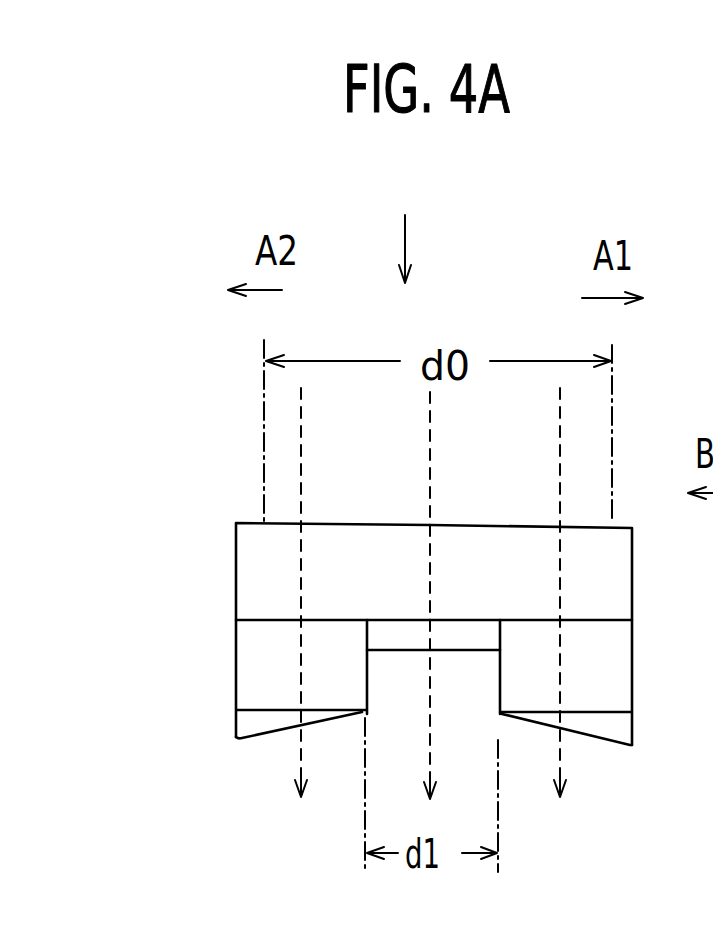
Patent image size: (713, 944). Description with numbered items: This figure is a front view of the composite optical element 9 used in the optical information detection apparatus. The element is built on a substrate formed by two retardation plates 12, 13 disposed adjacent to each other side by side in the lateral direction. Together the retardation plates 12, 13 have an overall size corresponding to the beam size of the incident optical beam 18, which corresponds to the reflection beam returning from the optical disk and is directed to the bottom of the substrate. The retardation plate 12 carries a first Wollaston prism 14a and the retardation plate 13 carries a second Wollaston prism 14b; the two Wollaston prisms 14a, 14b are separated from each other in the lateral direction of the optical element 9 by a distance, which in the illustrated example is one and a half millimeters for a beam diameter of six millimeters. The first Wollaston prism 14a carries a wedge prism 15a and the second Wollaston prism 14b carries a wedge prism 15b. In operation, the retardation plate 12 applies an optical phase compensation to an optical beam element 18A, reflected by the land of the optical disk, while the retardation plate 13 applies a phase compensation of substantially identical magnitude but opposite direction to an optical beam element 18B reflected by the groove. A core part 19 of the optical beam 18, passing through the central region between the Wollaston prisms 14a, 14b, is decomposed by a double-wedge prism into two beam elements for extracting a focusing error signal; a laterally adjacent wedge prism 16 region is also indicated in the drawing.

The composite optical element 9 is at (180, 163).
The retardation plate 12 is at (236, 568).
The retardation plate 13 is at (613, 572).
The first Wollaston prism 14a is at (236, 670).
The second Wollaston prism 14b is at (712, 665).
The wedge prism 15a is at (283, 733).
The wedge prism 15b is at (530, 725).
The recess bottom surface 16 is at (462, 640).
The incident optical beam 18 is at (412, 246).
The optical beam element 18A is at (264, 418).
The optical beam element 18B is at (612, 425).
The core part 19 is at (421, 730).